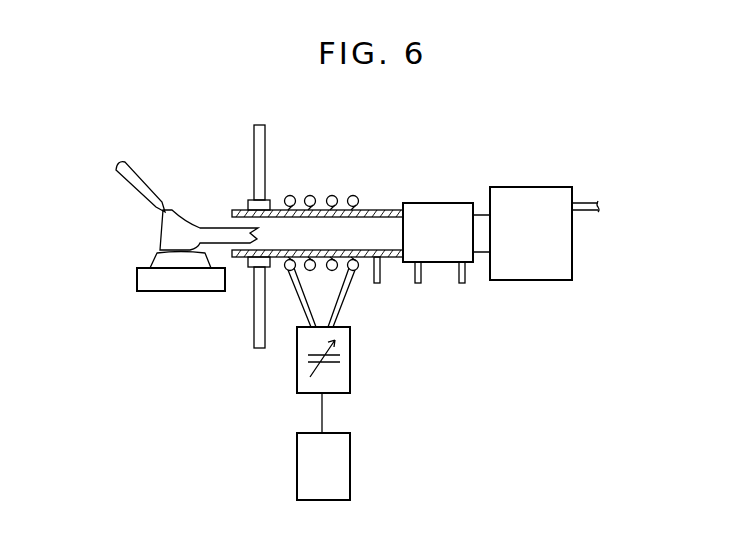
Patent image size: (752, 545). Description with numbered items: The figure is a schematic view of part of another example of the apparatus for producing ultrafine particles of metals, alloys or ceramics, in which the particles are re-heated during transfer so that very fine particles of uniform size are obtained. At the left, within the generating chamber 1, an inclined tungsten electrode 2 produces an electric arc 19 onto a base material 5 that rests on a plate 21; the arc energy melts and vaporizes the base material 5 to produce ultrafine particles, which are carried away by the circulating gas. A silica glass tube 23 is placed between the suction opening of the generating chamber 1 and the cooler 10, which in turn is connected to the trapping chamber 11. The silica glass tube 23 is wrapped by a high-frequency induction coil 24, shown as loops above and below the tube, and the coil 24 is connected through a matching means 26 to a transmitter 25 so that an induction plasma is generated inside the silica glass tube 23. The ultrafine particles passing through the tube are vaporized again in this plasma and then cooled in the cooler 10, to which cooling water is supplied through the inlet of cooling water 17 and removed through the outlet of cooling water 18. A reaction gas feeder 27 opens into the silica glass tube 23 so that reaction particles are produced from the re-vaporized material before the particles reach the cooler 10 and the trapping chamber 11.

The generating chamber 1 is at (265, 132).
The electrode 2 is at (130, 165).
The base material 5 is at (152, 262).
The cooler 10 is at (434, 203).
The trap 11 is at (534, 187).
The inlet of cooling water 17 is at (418, 289).
The outlet of cooling water 18 is at (462, 292).
The electric arc 19 is at (197, 222).
The plate 21 is at (137, 288).
The silica glass tube 23 is at (376, 210).
The high-frequency induction coil 24 is at (292, 196).
The transmitter 25 is at (350, 462).
The matching means 26 is at (350, 375).
The reaction gas feeder 27 is at (377, 289).